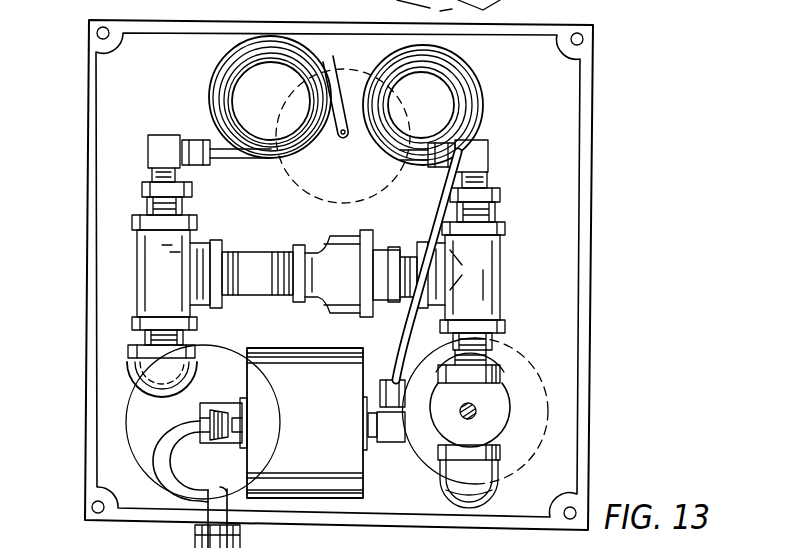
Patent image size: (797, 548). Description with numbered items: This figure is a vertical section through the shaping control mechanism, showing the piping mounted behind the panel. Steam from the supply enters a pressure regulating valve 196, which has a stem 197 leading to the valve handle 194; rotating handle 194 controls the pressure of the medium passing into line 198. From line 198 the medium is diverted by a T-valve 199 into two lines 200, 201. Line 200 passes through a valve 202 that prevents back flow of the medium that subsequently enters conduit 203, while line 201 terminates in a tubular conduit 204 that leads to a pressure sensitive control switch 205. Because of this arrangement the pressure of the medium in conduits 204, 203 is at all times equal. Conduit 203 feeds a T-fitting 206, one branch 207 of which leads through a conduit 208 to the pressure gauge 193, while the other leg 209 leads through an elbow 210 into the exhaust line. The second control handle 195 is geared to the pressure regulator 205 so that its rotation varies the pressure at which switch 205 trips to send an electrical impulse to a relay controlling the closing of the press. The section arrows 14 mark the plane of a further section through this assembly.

The section line 14- 14 is at (180, 506).
The pressure gauge 193 is at (308, 200).
The valve handle 194 is at (547, 402).
The valve handle 195 is at (130, 400).
The pressure regulating valve 196 is at (507, 380).
The stem 197 is at (465, 415).
The line 198 is at (495, 347).
The T-valve 199 is at (500, 267).
The line 200 is at (395, 247).
The line 201 is at (488, 176).
The valve 202 is at (348, 315).
The conduit 203 is at (260, 297).
The tubular conduit 204 is at (478, 86).
The pressure sensitive control switch 205 is at (352, 463).
The T-fitting 206 is at (143, 268).
The branch 207 is at (150, 196).
The conduit 208 is at (237, 160).
The leg 209 is at (150, 336).
The elbow 210 is at (153, 396).